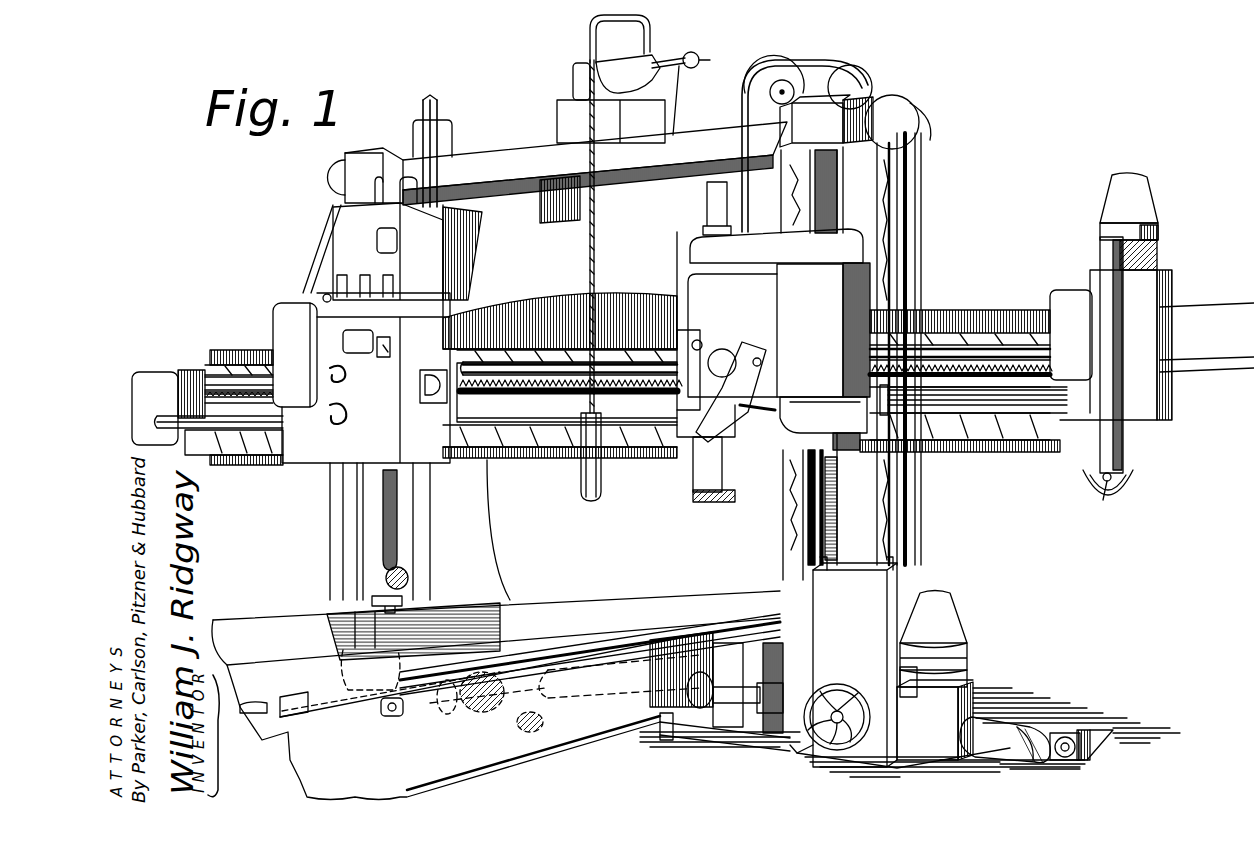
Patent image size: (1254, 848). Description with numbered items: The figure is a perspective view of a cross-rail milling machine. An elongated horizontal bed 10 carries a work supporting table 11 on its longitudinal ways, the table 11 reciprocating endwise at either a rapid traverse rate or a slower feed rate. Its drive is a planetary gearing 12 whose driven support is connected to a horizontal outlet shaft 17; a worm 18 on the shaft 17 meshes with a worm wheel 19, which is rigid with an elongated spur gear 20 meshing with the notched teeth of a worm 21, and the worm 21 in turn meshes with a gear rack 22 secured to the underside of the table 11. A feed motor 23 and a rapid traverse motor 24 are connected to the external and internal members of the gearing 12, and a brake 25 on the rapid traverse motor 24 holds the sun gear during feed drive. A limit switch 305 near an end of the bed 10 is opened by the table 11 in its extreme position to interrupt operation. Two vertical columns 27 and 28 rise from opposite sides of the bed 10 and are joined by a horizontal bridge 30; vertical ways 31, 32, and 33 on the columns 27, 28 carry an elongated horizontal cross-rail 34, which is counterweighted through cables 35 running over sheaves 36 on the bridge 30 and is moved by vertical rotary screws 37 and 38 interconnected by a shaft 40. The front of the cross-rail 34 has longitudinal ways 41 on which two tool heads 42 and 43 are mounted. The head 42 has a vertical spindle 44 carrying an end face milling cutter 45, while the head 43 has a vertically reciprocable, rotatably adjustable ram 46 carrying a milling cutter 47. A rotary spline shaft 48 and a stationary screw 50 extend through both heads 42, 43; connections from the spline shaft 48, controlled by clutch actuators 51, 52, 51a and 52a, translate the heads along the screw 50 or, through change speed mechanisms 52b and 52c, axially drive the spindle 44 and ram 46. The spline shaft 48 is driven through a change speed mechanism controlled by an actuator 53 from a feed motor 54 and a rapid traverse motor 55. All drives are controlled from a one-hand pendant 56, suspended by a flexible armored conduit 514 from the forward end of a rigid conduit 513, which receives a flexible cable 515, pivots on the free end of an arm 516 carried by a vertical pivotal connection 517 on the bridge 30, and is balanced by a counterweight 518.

The bed 10 is at (540, 750).
The work supporting table 11 is at (655, 602).
The planetary gearing 12 is at (985, 700).
The outlet shaft 17 is at (755, 748).
The worm 18 is at (533, 730).
The worm wheel 19 is at (560, 700).
The spur gear 20 is at (490, 712).
The worm 21 is at (444, 700).
The gear rack 22 is at (270, 716).
The feed motor 23 is at (970, 655).
The rapid traverse motor 24 is at (1040, 725).
The brake 25 is at (1085, 733).
The column 27 is at (490, 527).
The column 28 is at (910, 548).
The bridge 30 is at (512, 158).
The vertical way 31 is at (415, 512).
The vertical way 32 is at (790, 563).
The vertical way 33 is at (900, 516).
The cross-rail 34 is at (965, 456).
The cables 35 is at (431, 103).
The sheaves 36 is at (437, 118).
The screw 37 is at (372, 598).
The screw 38 is at (838, 513).
The shaft 40 is at (733, 690).
The ways 41 is at (500, 394).
The tool head 42 is at (686, 253).
The tool head 43 is at (288, 300).
The spindle 44 is at (700, 468).
The end face milling cutter 45 is at (697, 497).
The ram 46 is at (365, 530).
The milling cutter 47 is at (410, 575).
The spline shaft 48 is at (558, 388).
The screw 50 is at (622, 376).
The clutch actuator 51 is at (730, 345).
The clutch actuator 51a is at (758, 368).
The clutch actuator 52 is at (430, 378).
The clutch actuator 52a is at (383, 337).
The change speed mechanism 52b is at (345, 376).
The change speed mechanism 52c is at (342, 425).
The actuator 53 is at (1100, 498).
The feed motor 54 is at (1166, 232).
The rapid traverse motor 55 is at (1215, 308).
The pendant 56 is at (593, 502).
The limit switch 305 is at (391, 717).
The conduit 513 is at (646, 36).
The flexible armored conduit 514 is at (589, 260).
The flexible cable 515 is at (678, 98).
The arm 516 is at (623, 70).
The vertical pivotal connection 517 is at (572, 78).
The counterweight 518 is at (700, 57).